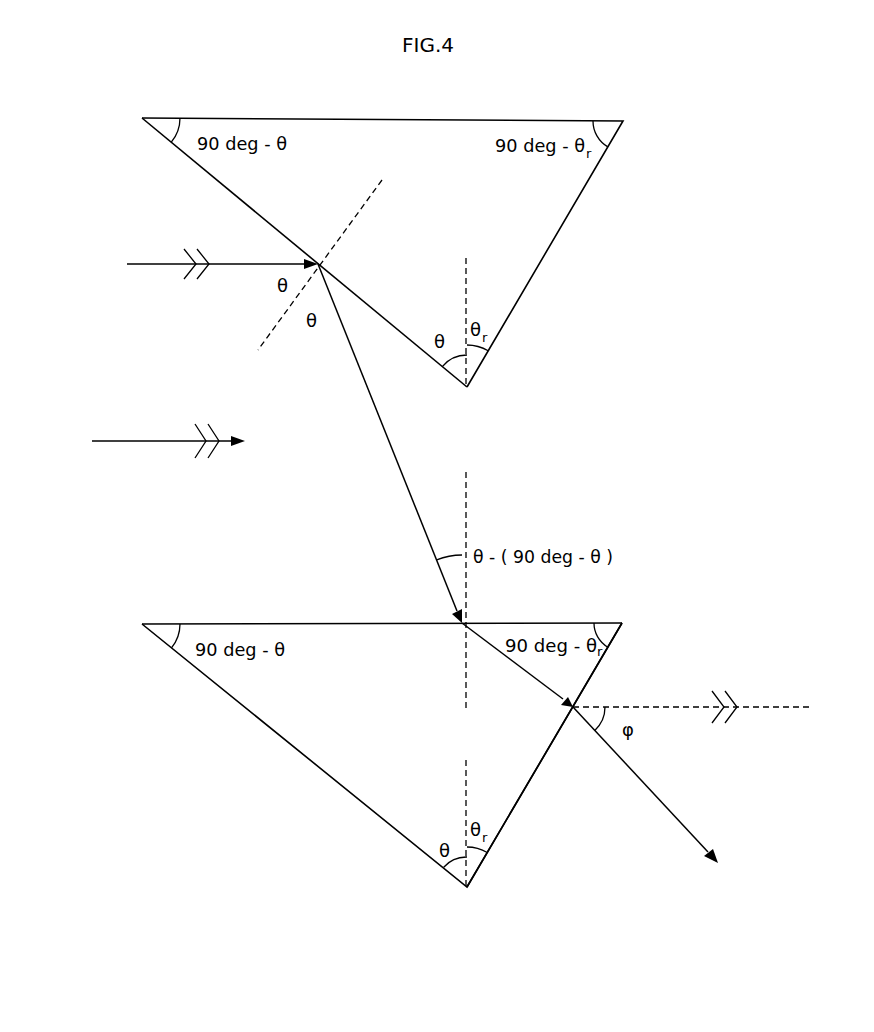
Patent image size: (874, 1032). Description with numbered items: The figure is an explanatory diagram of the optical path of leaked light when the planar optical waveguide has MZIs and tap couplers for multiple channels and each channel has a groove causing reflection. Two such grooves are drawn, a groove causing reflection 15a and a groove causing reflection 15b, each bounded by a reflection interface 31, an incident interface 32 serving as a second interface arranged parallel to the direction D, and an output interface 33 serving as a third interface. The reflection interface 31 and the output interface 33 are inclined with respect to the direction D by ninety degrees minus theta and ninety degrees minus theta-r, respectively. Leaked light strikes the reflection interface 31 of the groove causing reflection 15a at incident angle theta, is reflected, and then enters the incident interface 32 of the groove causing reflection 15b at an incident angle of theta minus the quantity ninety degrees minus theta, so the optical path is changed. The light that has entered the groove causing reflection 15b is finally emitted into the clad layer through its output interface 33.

The groove causing reflection 15a is at (379, 230).
The groove causing reflection 15b is at (382, 726).
The reflection interface 31 is at (218, 182).
The incident interface 32 is at (283, 623).
The output interface 33 is at (515, 810).
The direction D is at (143, 442).